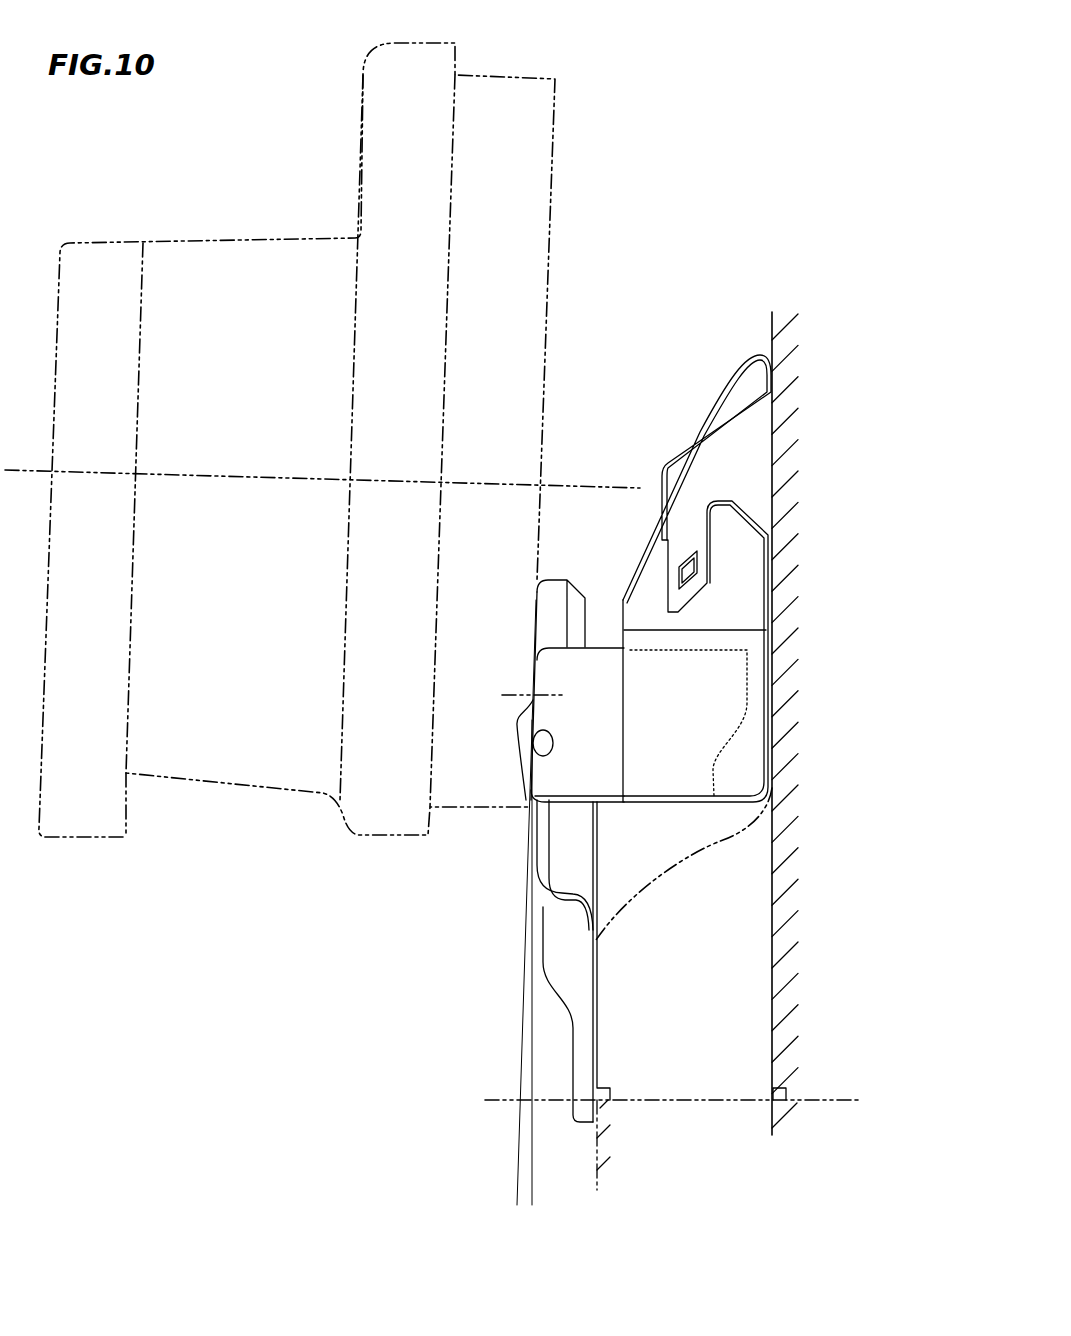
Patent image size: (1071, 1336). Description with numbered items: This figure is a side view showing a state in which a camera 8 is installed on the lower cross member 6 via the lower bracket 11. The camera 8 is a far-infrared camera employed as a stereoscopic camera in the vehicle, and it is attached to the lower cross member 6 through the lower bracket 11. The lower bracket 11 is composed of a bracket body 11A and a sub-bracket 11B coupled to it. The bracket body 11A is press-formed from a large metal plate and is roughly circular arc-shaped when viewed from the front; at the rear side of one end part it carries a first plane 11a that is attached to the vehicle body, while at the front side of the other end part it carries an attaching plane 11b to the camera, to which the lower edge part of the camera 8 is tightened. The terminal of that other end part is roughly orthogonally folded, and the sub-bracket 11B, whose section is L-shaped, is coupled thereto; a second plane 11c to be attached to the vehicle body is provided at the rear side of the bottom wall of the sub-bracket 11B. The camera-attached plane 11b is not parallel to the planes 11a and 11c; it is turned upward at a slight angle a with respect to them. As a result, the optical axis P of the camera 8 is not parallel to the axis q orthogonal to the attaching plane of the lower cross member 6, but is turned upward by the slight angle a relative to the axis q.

The far-infrared camera 8 is at (220, 240).
The optical axis of the camera P is at (240, 483).
The lower cross member 6 is at (772, 985).
The axis orthogonal to the attaching plane of the lower cross member q is at (690, 1100).
The lower bracket 11 is at (692, 420).
The bracket body 11A is at (558, 947).
The sub-bracket 11B is at (630, 592).
The first plane to be attached to the vehicle body 11a is at (597, 1048).
The attaching plane to the camera 11b is at (530, 778).
The second plane to be attached to the vehicle body 11c is at (773, 700).
The slight angle a is at (553, 1188).